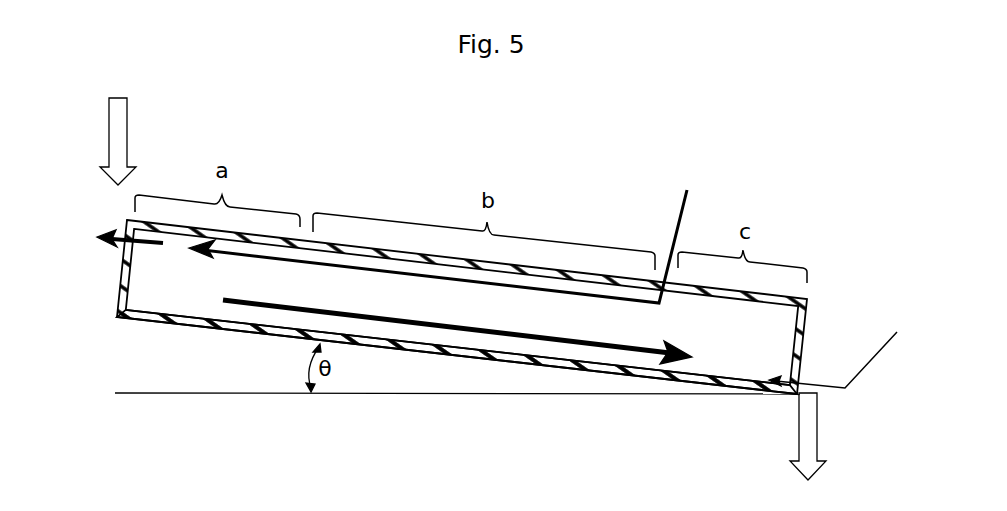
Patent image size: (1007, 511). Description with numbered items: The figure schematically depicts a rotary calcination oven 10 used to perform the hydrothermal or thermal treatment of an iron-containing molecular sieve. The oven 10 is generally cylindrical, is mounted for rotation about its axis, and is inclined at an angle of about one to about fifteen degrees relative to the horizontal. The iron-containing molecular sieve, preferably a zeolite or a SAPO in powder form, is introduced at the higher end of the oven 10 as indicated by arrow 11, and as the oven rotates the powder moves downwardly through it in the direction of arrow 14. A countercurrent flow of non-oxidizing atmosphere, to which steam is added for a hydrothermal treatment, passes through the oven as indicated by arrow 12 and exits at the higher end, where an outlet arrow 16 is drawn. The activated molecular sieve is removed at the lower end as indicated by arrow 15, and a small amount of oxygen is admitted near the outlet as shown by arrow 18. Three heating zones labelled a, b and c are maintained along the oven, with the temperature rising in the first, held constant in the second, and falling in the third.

The rotary calcination oven 10 is at (346, 246).
The arrow 11 is at (128, 112).
The arrow 12 is at (536, 280).
The arrow 14 is at (559, 363).
The arrow 15 is at (799, 431).
The gas outlet flow 16 is at (127, 232).
The arrow 18 is at (873, 358).